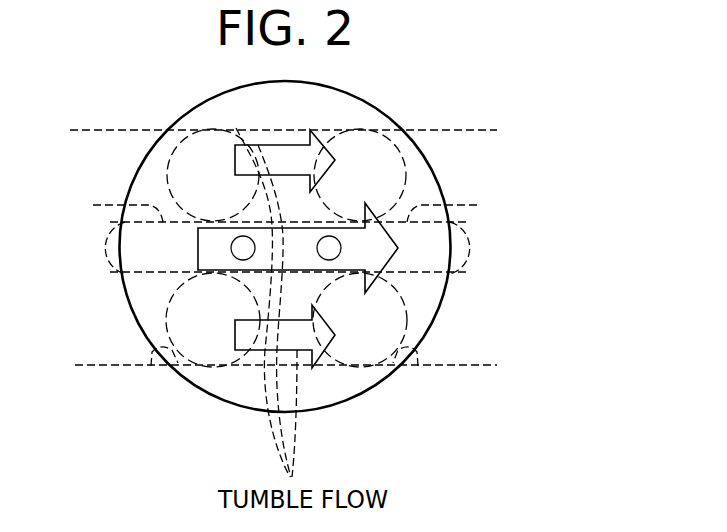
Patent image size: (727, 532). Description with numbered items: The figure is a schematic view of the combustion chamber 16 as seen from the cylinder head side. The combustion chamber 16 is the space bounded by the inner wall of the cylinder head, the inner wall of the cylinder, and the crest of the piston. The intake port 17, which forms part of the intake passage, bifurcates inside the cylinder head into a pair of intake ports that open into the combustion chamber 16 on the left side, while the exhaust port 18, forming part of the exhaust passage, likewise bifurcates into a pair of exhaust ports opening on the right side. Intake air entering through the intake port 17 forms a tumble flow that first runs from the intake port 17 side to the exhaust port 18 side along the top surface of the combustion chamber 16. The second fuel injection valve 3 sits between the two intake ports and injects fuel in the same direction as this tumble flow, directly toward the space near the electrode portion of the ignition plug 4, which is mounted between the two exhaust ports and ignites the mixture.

The combustion chamber 16 is at (266, 82).
The intake port 17 is at (93, 205).
The exhaust port 18 is at (500, 192).
The second fuel injection valve 3 is at (231, 249).
The ignition plug 4 is at (317, 246).